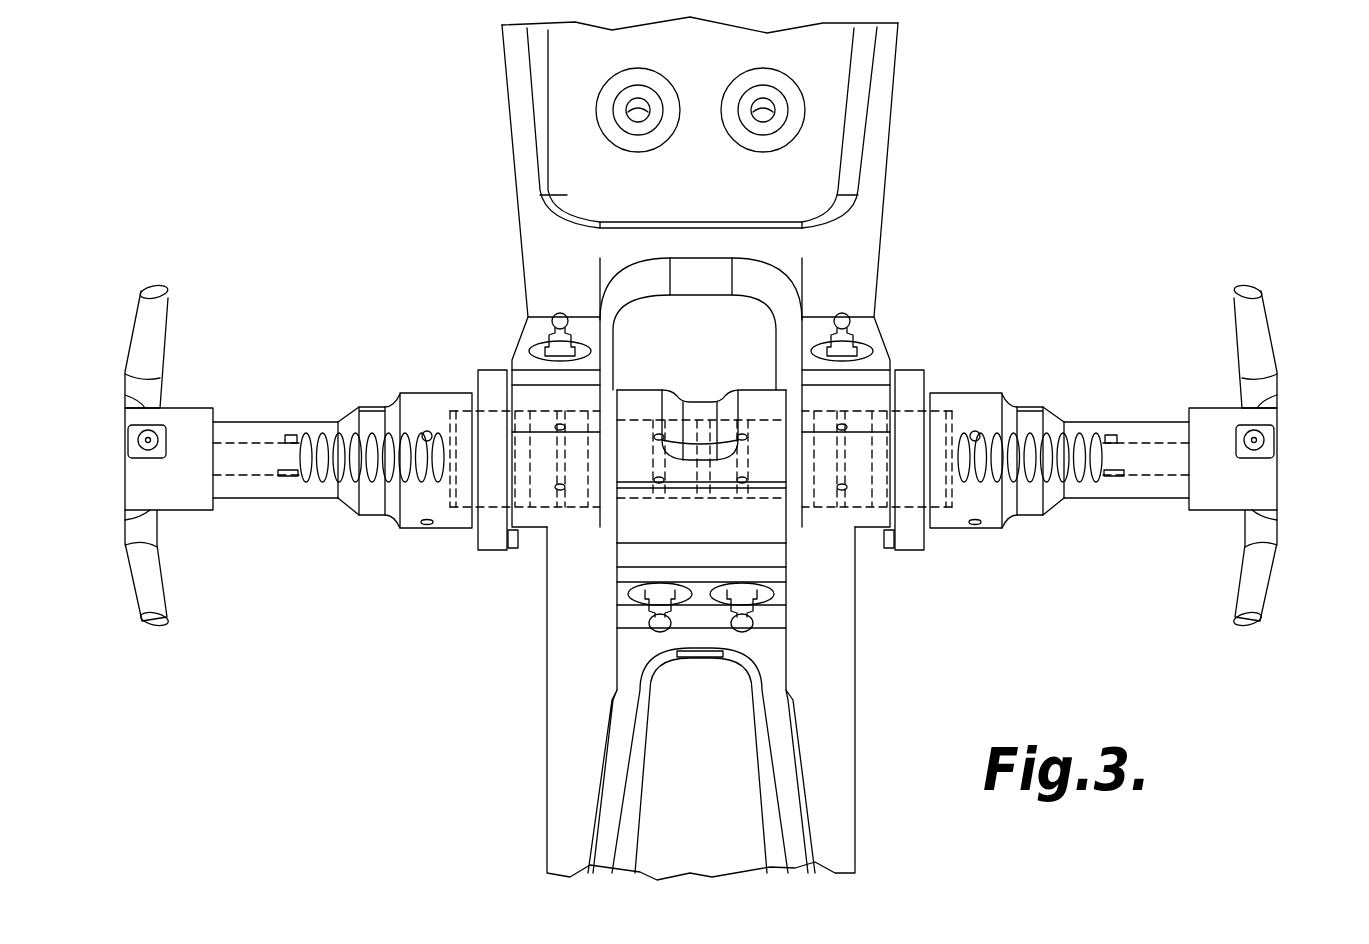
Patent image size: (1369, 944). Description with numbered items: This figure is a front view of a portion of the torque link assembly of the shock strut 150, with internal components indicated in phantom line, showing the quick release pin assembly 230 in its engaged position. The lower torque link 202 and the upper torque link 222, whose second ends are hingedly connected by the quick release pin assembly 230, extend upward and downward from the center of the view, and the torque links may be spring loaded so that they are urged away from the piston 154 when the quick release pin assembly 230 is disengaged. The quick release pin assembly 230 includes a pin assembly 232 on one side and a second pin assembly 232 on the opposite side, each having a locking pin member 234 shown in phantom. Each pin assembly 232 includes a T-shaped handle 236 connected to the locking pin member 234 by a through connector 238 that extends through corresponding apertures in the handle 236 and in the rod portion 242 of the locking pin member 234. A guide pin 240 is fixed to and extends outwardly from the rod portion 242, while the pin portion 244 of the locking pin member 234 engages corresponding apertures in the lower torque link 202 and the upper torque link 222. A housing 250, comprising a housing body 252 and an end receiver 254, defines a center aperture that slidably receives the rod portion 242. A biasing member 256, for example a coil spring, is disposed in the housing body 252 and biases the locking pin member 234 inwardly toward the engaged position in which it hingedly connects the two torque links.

The shock strut 150 is at (1050, 182).
The piston 154 is at (866, 773).
The lower torque link 202 is at (807, 740).
The upper torque link 222 is at (900, 105).
The quick release pin assembly 230 is at (1035, 332).
The pin assembly 232 is at (346, 402).
The locking pin member 234 is at (254, 436).
The handle 236 is at (135, 330).
The through connector 238 is at (1258, 440).
The guide pin 240 is at (293, 428).
The rod portion 242 is at (258, 478).
The pin portion 244 is at (637, 500).
The housing 250 is at (396, 390).
The housing body 252 is at (960, 520).
The end receiver 254 is at (483, 538).
The biasing member 256 is at (350, 487).